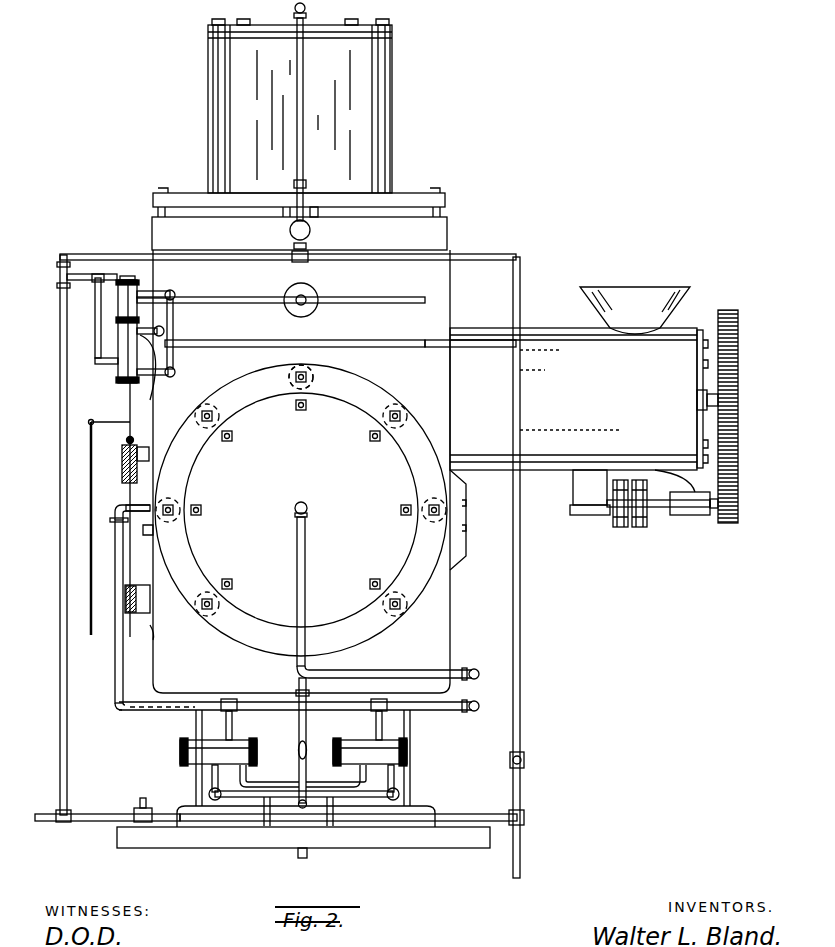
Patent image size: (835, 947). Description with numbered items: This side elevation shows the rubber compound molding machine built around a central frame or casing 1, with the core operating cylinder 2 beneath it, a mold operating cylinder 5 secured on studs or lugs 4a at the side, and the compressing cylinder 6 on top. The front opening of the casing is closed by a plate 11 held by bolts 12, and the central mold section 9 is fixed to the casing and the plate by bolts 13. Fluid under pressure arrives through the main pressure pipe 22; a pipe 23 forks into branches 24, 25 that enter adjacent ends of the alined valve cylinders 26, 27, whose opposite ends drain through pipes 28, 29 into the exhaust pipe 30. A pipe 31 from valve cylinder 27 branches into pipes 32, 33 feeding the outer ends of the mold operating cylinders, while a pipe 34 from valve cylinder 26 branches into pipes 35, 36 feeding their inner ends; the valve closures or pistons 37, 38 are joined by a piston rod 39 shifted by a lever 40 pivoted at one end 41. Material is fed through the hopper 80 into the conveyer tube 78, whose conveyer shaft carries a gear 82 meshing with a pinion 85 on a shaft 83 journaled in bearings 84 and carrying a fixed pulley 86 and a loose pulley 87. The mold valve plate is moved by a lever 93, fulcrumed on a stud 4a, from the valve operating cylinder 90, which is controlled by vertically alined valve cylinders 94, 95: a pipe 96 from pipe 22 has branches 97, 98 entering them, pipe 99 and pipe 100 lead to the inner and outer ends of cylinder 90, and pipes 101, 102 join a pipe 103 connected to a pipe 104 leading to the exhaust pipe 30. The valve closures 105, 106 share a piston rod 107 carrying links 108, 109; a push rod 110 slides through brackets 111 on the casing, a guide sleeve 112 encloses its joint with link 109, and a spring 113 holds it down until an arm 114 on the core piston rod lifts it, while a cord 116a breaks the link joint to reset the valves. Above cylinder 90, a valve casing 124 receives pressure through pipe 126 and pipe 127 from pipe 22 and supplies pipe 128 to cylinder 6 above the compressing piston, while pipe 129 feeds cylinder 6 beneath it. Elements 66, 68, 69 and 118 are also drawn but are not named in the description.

The central frame or casing 1 is at (452, 622).
The core operating cylinder 2 is at (398, 787).
The studs or lugs 4a is at (314, 380).
The mold operating cylinder 5 is at (301, 510).
The compressing cylinder 6 is at (392, 100).
The central mold section 9 is at (456, 845).
The plate 11 is at (148, 535).
The bolts 12 is at (122, 524).
The bolts 13 is at (467, 526).
The main pressure pipe 22 is at (488, 255).
The pipe 23 is at (465, 815).
The branch pipe 24 is at (249, 769).
The branch pipe 25 is at (395, 775).
The valve cylinder 26 is at (180, 753).
The valve cylinder 27 is at (410, 752).
The pipe 28 is at (212, 777).
The pipe 29 is at (400, 795).
The outlet or exhaust pipe 30 is at (100, 822).
The pipe 31 is at (378, 722).
The branch pipe 32 is at (470, 668).
The branch pipe 33 is at (297, 578).
The pipe 34 is at (233, 736).
The branch pipe 35 is at (333, 711).
The branch pipe 36 is at (115, 665).
The valve closure or piston 37 is at (196, 740).
The valve closure or piston 38 is at (385, 738).
The piston rod 39 is at (300, 748).
The lever 40 is at (300, 722).
The pivot end of lever 41 is at (300, 808).
The valve 66 is at (525, 762).
The drain pipe 68 is at (310, 855).
The tee fitting 69 is at (140, 808).
The conveyer tube 78 is at (560, 333).
The hopper 80 is at (638, 290).
The gear 82 is at (740, 340).
The shaft 83 is at (662, 508).
The bearings 84 is at (590, 515).
The pinion 85 is at (740, 502).
The fixed pulley 86 is at (620, 528).
The loose pulley 87 is at (641, 528).
The valve operating cylinder 90 is at (318, 302).
The lever 93 is at (300, 346).
The valve cylinder 94 is at (118, 348).
The valve cylinder 95 is at (118, 304).
The pipe 96 is at (430, 340).
The branch pipe 97 is at (165, 380).
The branch pipe 98 is at (165, 291).
The pipe 99 is at (95, 330).
The pipe 100 is at (281, 292).
The pipe 101 is at (151, 397).
The pipe 102 is at (162, 327).
The pipe 103 is at (121, 276).
The pipe 104 is at (60, 462).
The piston or valve closure 105 is at (116, 381).
The piston or valve closure 106 is at (117, 292).
The piston rod 107 is at (128, 402).
The link 108 is at (91, 423).
The link 109 is at (115, 439).
The push rod 110 is at (120, 495).
The brackets 111 is at (150, 632).
The guide sleeve 112 is at (112, 464).
The spring 113 is at (125, 605).
The arm 114 is at (146, 726).
The cord 116a is at (90, 550).
The block 118 is at (320, 212).
The valve casing 124 is at (290, 232).
The pipe 126 is at (307, 247).
The pipe 127 is at (308, 262).
The pipe 128 is at (297, 68).
The pipe 129 is at (306, 186).